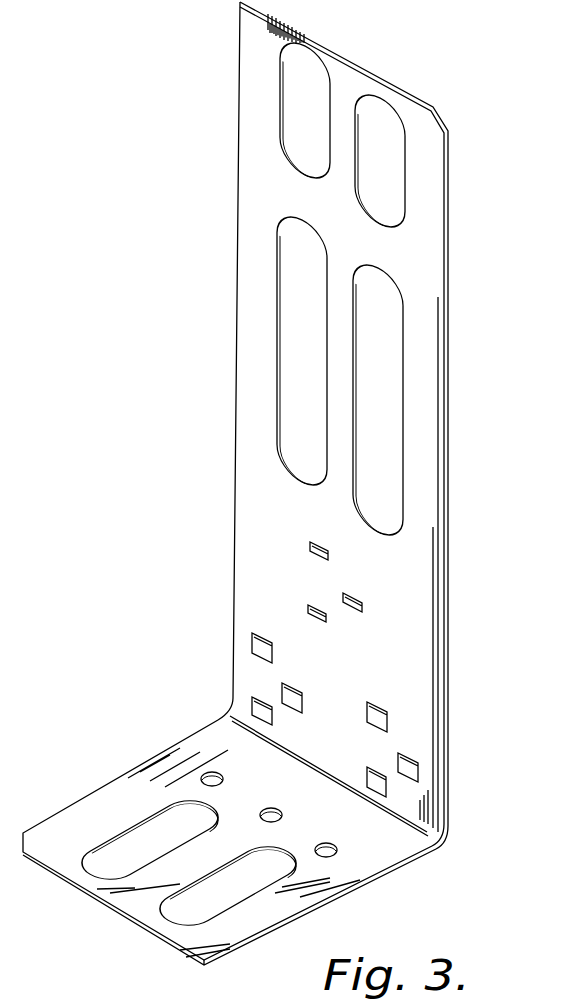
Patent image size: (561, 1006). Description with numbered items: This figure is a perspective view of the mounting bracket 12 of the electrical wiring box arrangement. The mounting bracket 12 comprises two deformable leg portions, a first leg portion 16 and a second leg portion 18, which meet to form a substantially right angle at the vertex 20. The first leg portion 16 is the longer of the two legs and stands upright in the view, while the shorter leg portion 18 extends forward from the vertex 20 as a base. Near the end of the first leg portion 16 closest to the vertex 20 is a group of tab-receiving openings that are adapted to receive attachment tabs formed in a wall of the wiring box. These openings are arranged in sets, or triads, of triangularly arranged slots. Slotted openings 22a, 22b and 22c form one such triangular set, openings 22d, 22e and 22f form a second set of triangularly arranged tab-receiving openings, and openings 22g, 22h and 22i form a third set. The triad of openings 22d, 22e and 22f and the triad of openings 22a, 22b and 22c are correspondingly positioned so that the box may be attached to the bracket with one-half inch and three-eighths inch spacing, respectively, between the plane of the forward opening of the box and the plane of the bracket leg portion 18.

The mounting bracket 12 is at (284, 483).
The first leg portion 16 is at (266, 510).
The second leg portion 18 is at (319, 812).
The vertex 20 is at (407, 820).
The slotted opening 22a is at (266, 718).
The slotted opening 22b is at (368, 773).
The slotted opening 22c is at (320, 604).
The tab-receiving opening 22d is at (295, 683).
The tab-receiving opening 22e is at (413, 754).
The tab-receiving opening 22f is at (350, 597).
The tab-receiving opening 22g is at (263, 633).
The tab-receiving opening 22h is at (373, 702).
The tab-receiving opening 22i is at (319, 541).